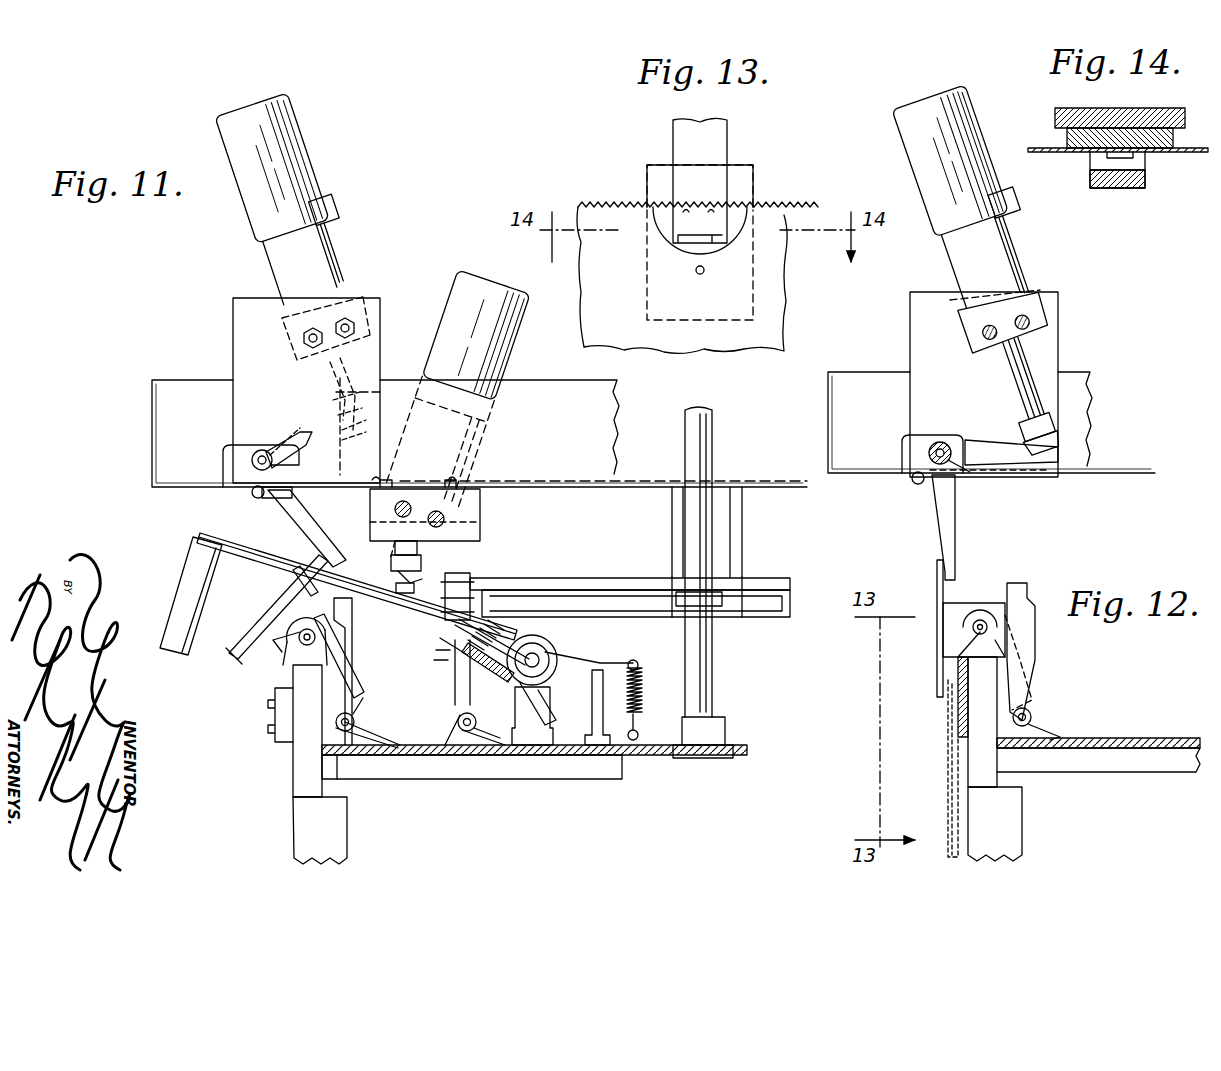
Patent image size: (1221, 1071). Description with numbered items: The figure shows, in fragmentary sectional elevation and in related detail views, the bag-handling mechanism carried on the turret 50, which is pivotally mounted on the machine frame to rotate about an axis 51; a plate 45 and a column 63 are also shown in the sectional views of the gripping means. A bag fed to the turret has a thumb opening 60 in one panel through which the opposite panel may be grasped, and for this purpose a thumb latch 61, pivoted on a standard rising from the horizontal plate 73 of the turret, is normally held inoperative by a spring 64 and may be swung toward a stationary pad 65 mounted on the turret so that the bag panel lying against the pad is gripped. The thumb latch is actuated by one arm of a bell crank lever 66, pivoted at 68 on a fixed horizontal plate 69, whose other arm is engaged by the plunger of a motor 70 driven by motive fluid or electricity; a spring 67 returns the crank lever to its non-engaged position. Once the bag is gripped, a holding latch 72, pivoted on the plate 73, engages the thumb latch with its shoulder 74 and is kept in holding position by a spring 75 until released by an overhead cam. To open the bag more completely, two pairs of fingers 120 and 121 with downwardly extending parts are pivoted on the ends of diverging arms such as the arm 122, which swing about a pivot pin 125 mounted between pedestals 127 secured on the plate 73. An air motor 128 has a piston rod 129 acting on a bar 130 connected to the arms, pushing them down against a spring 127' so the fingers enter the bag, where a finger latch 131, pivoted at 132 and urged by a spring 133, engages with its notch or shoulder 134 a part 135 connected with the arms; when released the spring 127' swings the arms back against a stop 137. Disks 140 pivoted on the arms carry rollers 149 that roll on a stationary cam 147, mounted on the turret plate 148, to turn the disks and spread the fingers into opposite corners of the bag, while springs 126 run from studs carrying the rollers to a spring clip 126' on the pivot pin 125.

In FIG. 13, the plate 45 is at (734, 346).
In FIG. 14, the plate 45 is at (1036, 142).
In FIG. 12, the plate 45 is at (948, 792).
In FIG. 11, the turret 50 is at (282, 838).
In FIG. 12, the turret 50 is at (1192, 726).
In FIG. 11, the axis 51 is at (714, 428).
In FIG. 13, the thumb opening 60 is at (638, 202).
In FIG. 11, the thumb latch 61 is at (228, 654).
In FIG. 13, the thumb latch 61 is at (673, 129).
In FIG. 14, the thumb latch 61 is at (1120, 188).
In FIG. 12, the thumb latch 61 is at (937, 658).
In FIG. 11, the column 63 is at (293, 772).
In FIG. 14, the column 63 is at (1162, 110).
In FIG. 12, the column 63 is at (1000, 688).
In FIG. 11, the spring 64 is at (284, 611).
In FIG. 12, the spring 64 is at (960, 604).
In FIG. 11, the stationary pad 65 is at (274, 725).
In FIG. 13, the stationary pad 65 is at (752, 168).
In FIG. 14, the stationary pad 65 is at (1098, 110).
In FIG. 12, the stationary pad 65 is at (958, 722).
In FIG. 11, the bell crank lever 66 is at (278, 514).
In FIG. 12, the bell crank lever 66 is at (956, 523).
In FIG. 11, the spring 67 is at (303, 430).
In FIG. 12, the spring 67 is at (986, 434).
In FIG. 11, the pivot 68 is at (221, 456).
In FIG. 12, the pivot 68 is at (900, 438).
In FIG. 11, the horizontal plate 69 is at (162, 490).
In FIG. 12, the horizontal plate 69 is at (1122, 464).
In FIG. 11, the motor 70 is at (300, 114).
In FIG. 12, the motor 70 is at (910, 110).
In FIG. 11, the holding latch 72 is at (358, 665).
In FIG. 12, the holding latch 72 is at (1036, 660).
In FIG. 11, the horizontal plate 73 is at (748, 756).
In FIG. 12, the horizontal plate 73 is at (1138, 738).
In FIG. 12, the shoulder 74 is at (1018, 648).
In FIG. 11, the spring 75 is at (368, 740).
In FIG. 12, the spring 75 is at (1058, 736).
In FIG. 11, the fingers 120 is at (197, 551).
In FIG. 11, the fingers 121 is at (196, 584).
In FIG. 11, the arm 122 is at (296, 572).
In FIG. 11, the pivot pin 125 is at (548, 644).
In FIG. 11, the springs 126 is at (474, 672).
In FIG. 11, the spring clip 126' is at (589, 653).
In FIG. 11, the pedestals 127 is at (537, 757).
In FIG. 11, the spring 127' is at (655, 682).
In FIG. 11, the air motor 128 is at (458, 282).
In FIG. 11, the piston rod 129 is at (420, 549).
In FIG. 11, the bar 130 is at (382, 561).
In FIG. 11, the finger latch 131 is at (465, 684).
In FIG. 11, the pivot 132 is at (482, 778).
In FIG. 11, the spring 133 is at (440, 776).
In FIG. 11, the notch or shoulder 134 is at (487, 634).
In FIG. 11, the part 135 is at (565, 594).
In FIG. 11, the stop 137 is at (593, 780).
In FIG. 11, the disks 140 is at (372, 618).
In FIG. 11, the stationary cam 147 is at (495, 596).
In FIG. 11, the plate 148 is at (760, 577).
In FIG. 11, the rollers 149 is at (523, 571).